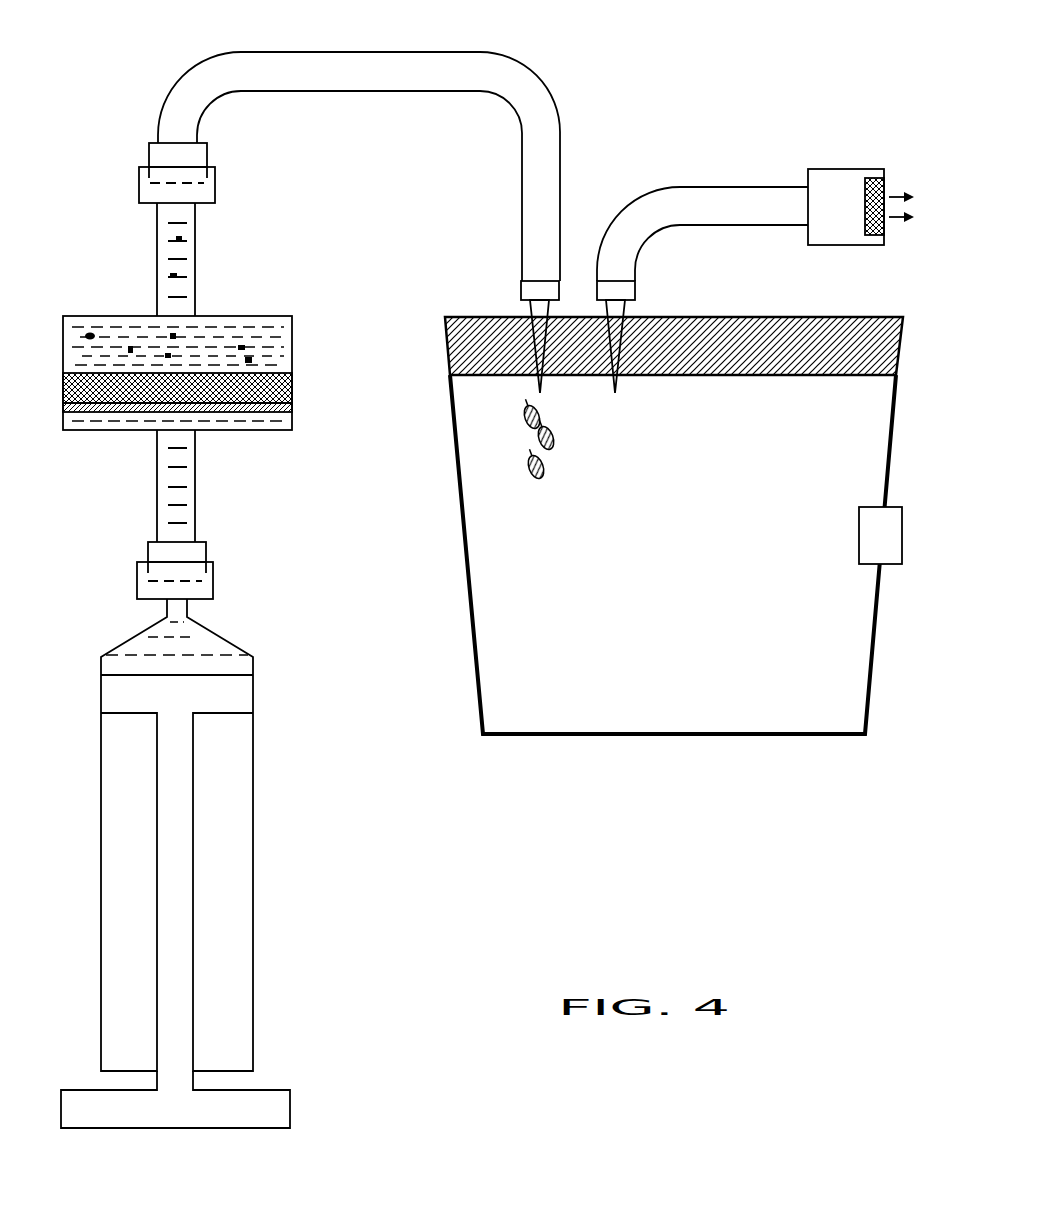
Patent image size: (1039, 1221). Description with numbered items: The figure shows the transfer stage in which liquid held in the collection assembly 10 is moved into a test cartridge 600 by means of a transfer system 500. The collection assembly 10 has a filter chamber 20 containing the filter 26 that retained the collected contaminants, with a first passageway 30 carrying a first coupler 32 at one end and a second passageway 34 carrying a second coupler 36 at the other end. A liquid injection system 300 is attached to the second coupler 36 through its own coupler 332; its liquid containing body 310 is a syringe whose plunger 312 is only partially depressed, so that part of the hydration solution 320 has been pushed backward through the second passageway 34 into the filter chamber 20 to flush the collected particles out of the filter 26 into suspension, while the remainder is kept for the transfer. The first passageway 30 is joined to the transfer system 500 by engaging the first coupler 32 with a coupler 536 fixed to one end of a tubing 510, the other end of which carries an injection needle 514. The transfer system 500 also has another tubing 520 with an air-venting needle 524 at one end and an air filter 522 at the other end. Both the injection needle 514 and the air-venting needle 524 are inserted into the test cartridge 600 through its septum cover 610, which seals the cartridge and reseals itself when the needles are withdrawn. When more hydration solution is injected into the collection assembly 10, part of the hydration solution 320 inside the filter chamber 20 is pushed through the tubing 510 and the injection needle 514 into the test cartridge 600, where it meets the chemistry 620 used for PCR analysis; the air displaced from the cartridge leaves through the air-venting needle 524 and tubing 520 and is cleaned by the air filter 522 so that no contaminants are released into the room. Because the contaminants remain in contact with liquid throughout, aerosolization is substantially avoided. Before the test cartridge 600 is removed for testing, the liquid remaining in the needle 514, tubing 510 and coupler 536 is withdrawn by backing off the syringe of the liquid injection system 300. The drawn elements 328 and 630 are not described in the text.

The collection assembly 10 is at (88, 241).
The filter chamber 20 is at (215, 317).
The filter 26 is at (292, 392).
The first passageway 30 is at (157, 298).
The first coupler 32 is at (215, 193).
The second passageway 34 is at (197, 500).
The second coupler 36 is at (197, 552).
The liquid injection system 300 is at (330, 860).
The liquid containing body 310 is at (253, 862).
The plunger 312 is at (233, 695).
The hydration solution 320 is at (150, 636).
The particulates 328 is at (112, 335).
The coupler 332 is at (213, 573).
The transfer system 500 is at (642, 115).
The tubing 510 is at (455, 77).
The injection needle 514 is at (538, 338).
The tubing 520 is at (750, 205).
The air filter 522 is at (873, 178).
The air-venting needle 524 is at (617, 338).
The coupler 536 is at (197, 157).
The test cartridge 600 is at (683, 745).
The septum cover 610 is at (835, 335).
The chemistry 620 is at (503, 581).
The container port 630 is at (893, 555).